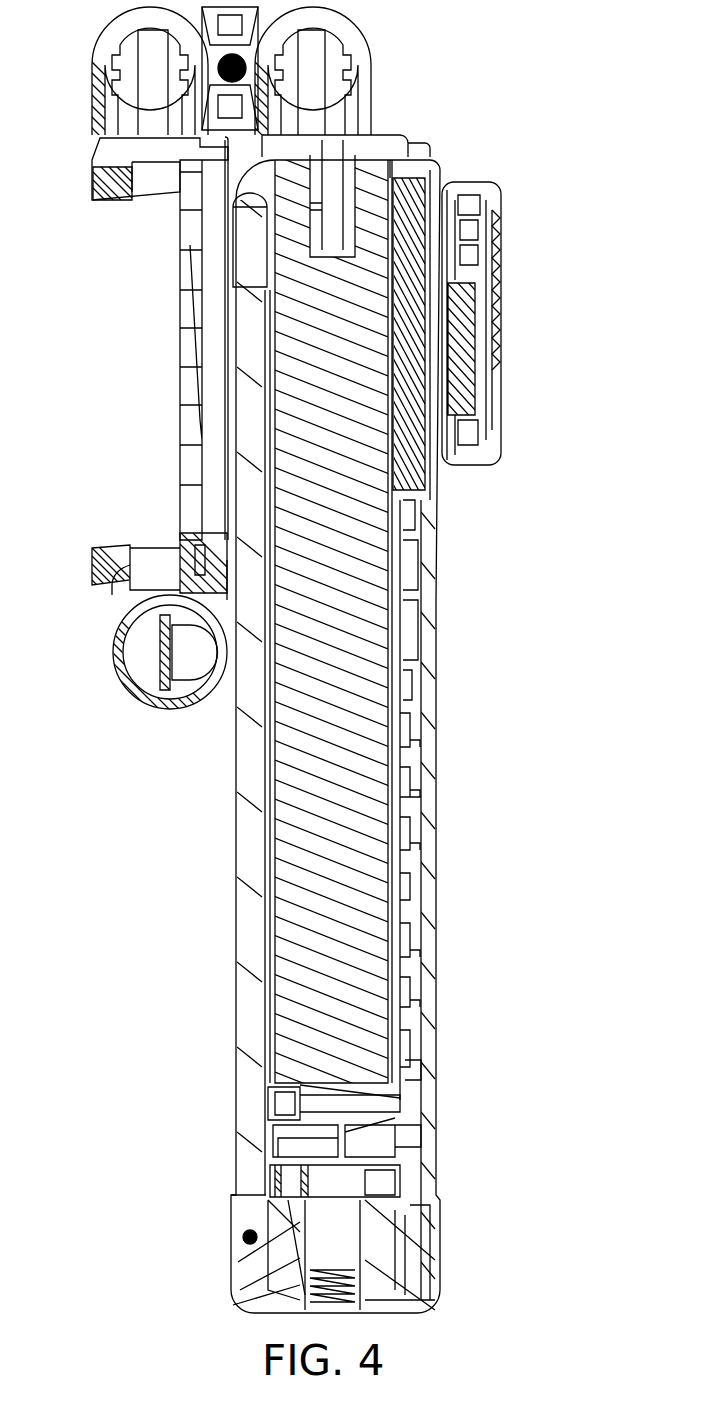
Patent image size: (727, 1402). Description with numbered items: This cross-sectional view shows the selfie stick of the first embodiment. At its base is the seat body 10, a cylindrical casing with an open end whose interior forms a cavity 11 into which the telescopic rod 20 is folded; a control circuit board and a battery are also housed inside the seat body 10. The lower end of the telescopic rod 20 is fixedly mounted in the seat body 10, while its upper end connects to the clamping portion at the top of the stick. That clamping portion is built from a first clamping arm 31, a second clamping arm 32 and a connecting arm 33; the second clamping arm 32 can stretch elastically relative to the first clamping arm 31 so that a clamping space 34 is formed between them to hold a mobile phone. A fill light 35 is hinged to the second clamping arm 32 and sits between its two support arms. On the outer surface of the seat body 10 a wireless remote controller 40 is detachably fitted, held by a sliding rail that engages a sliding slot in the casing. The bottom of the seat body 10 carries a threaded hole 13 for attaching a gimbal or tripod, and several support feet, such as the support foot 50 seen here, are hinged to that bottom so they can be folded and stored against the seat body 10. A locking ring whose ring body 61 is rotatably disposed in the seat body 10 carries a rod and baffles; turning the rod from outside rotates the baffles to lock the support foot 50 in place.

The seat body 10 is at (430, 940).
The cavity 11 is at (342, 1170).
The threaded hole 13 is at (336, 1275).
The telescopic rod 20 is at (360, 815).
The first clamping arm 31 is at (125, 150).
The second clamping arm 32 is at (160, 568).
The connecting arm 33 is at (372, 63).
The clamping space 34 is at (122, 372).
The fill light 35 is at (126, 686).
The wireless remote controller 40 is at (508, 397).
The support foot 50 is at (245, 828).
The ring body 61 is at (231, 1195).